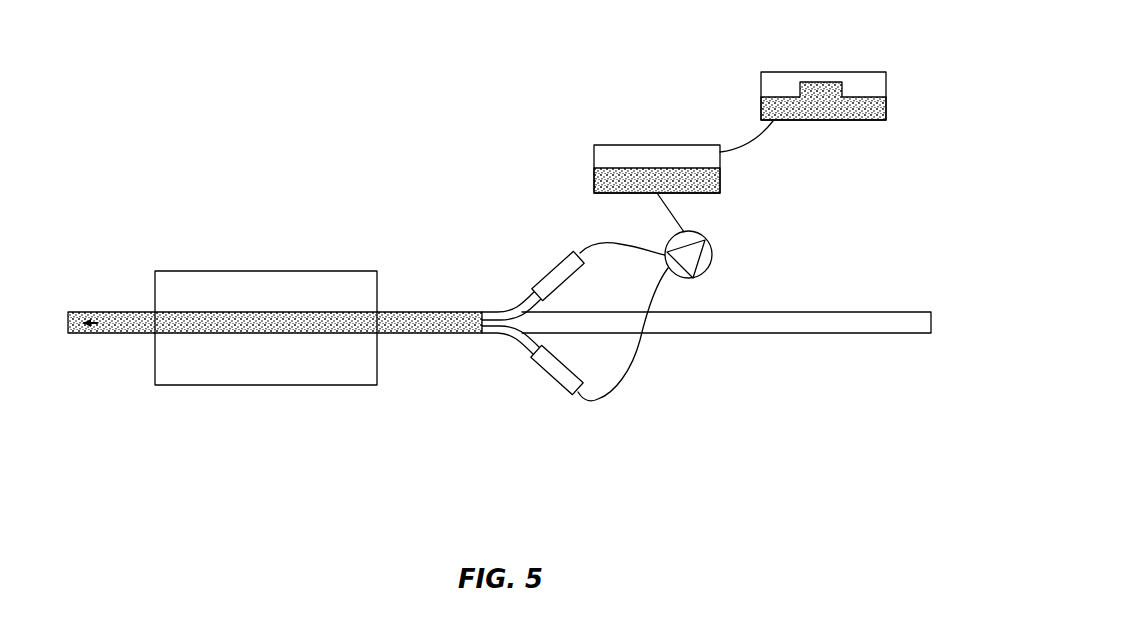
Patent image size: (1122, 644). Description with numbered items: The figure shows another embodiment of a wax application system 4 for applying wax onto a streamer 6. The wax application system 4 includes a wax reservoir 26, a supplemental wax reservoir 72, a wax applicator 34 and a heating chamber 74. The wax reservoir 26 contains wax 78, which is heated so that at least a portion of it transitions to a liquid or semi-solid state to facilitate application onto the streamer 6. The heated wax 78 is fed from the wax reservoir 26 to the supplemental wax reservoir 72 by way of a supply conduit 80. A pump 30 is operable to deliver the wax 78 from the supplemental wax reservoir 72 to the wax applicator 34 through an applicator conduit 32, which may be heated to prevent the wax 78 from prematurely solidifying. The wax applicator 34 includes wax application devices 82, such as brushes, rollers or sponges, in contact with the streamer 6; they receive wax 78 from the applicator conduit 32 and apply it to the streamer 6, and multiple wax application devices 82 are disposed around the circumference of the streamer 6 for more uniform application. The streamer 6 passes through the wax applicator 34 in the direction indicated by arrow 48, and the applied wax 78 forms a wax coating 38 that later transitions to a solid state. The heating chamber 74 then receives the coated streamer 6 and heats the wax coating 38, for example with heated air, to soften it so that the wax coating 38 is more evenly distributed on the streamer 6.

The wax application system 4 is at (316, 119).
The streamer 6 is at (842, 312).
The wax reservoir 26 is at (868, 72).
The pump 30 is at (713, 253).
The applicator conduit 32 is at (592, 243).
The wax applicator 34 is at (516, 360).
The wax coating 38 is at (428, 310).
The arrow 48 is at (120, 318).
The supplemental wax reservoir 72 is at (648, 145).
The heating chamber 74 is at (288, 270).
The wax 78 is at (523, 302).
The supply conduit 80 is at (738, 147).
The wax application device 82 is at (557, 258).